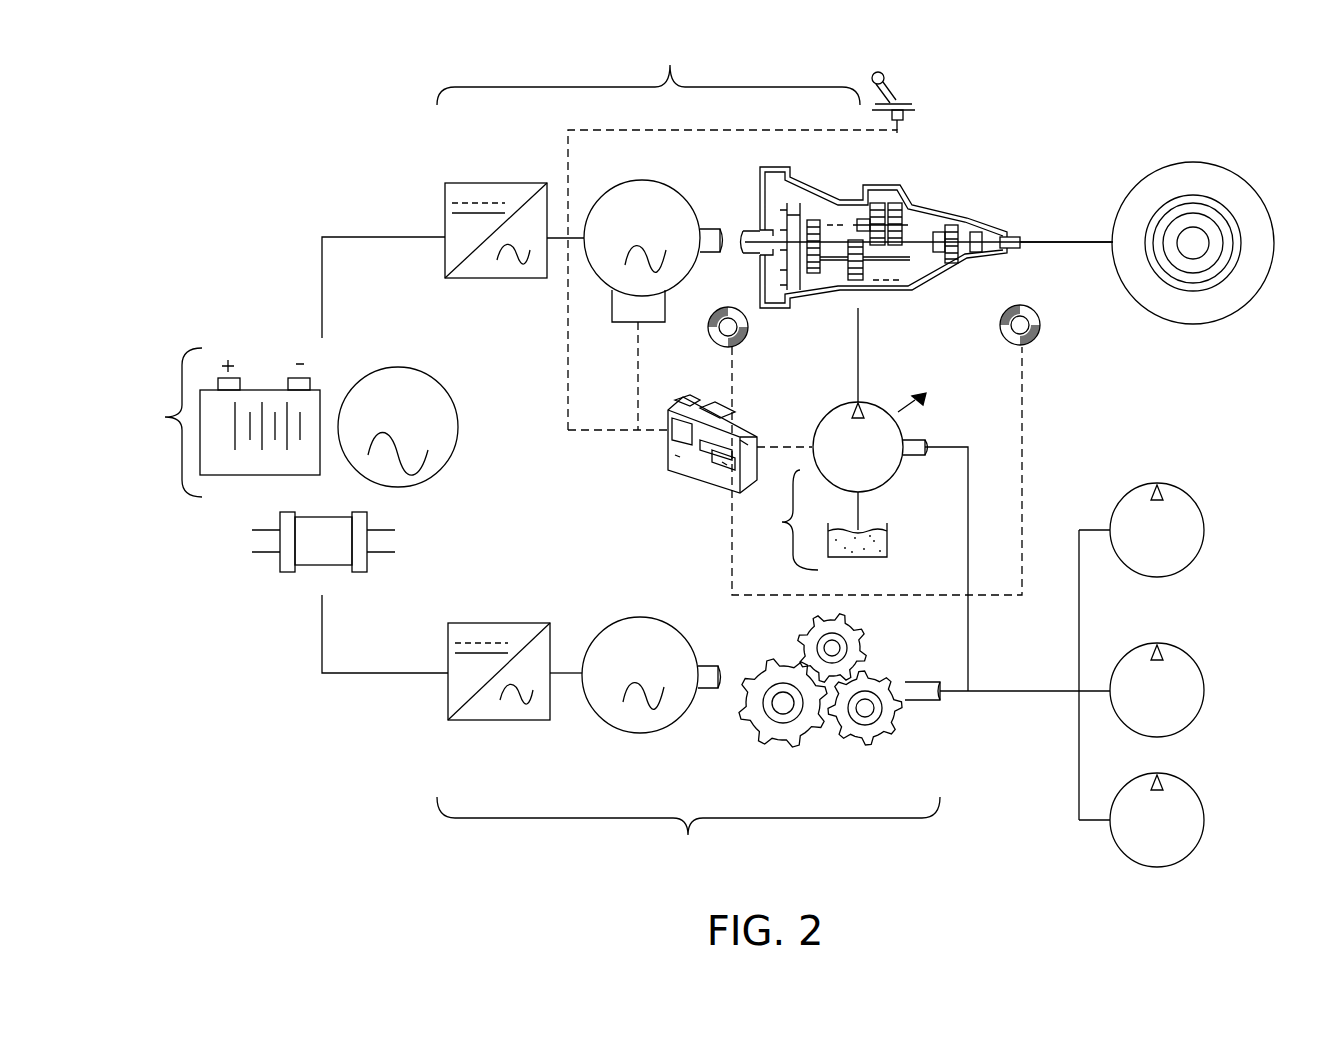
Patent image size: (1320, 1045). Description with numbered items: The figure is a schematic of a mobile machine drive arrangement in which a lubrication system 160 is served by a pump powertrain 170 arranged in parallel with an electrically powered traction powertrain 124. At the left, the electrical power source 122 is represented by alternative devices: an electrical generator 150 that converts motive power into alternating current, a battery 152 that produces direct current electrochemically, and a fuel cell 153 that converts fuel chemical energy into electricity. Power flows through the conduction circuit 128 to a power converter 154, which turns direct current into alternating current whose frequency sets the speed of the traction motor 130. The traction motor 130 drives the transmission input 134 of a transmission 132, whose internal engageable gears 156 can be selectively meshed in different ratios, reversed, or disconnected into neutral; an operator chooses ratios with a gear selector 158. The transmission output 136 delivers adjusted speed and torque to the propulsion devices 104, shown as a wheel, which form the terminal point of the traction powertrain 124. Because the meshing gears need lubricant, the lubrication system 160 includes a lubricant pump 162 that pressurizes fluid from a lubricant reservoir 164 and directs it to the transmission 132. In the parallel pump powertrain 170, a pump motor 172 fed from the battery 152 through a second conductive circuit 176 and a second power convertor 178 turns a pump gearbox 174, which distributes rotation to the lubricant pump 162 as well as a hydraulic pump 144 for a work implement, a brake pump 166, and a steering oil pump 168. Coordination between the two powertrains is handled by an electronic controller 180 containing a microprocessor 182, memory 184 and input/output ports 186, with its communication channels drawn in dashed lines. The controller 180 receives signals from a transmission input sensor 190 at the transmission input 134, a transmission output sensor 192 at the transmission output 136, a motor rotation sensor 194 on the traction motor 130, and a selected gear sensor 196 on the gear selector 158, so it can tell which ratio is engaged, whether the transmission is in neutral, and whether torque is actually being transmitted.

The propulsion devices 104 is at (1222, 320).
The electrical power source 122 is at (162, 422).
The traction powertrain 124 is at (648, 70).
The conduction circuit 128 is at (372, 237).
The traction motor 130 is at (680, 188).
The transmission 132 is at (843, 197).
The transmission input 134 is at (755, 225).
The transmission output 136 is at (1018, 237).
The hydraulic pump 144 is at (1190, 499).
The electrical generator 150 is at (447, 372).
The battery 152 is at (258, 390).
The fuel cell 153 is at (308, 565).
The power converter 154 is at (497, 183).
The engageable gears 156 is at (945, 227).
The gear selector 158 is at (895, 88).
The lubrication system 160 is at (779, 520).
The lubricant pump 162 is at (883, 405).
The lubricant reservoir 164 is at (887, 543).
The brake pump 166 is at (1190, 658).
The steering oil pump 168 is at (1198, 793).
The pump powertrain 170 is at (688, 836).
The pump motor 172 is at (628, 620).
The pump gearbox 174 is at (778, 733).
The second conductive circuit 176 is at (380, 673).
The second power convertor 178 is at (498, 623).
The electronic controller 180 is at (732, 450).
The microprocessor 182 is at (678, 458).
The memory 184 is at (750, 445).
The input/output ports 186 is at (722, 466).
The transmission input sensor 190 is at (748, 322).
The transmission output sensor 192 is at (1040, 320).
The motor rotation sensor 194 is at (622, 322).
The selected gear sensor 196 is at (905, 118).